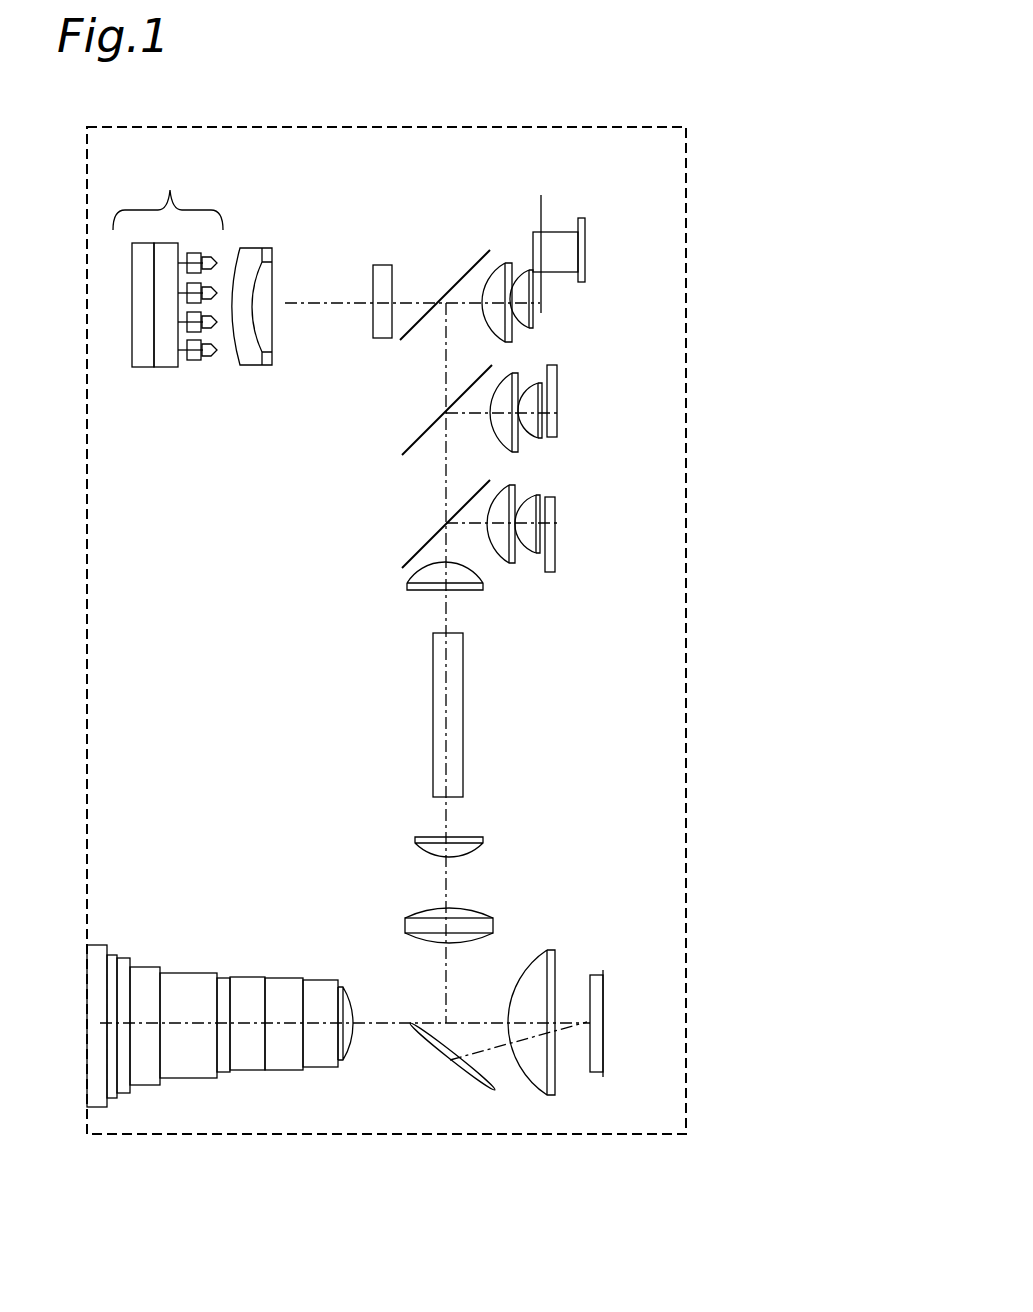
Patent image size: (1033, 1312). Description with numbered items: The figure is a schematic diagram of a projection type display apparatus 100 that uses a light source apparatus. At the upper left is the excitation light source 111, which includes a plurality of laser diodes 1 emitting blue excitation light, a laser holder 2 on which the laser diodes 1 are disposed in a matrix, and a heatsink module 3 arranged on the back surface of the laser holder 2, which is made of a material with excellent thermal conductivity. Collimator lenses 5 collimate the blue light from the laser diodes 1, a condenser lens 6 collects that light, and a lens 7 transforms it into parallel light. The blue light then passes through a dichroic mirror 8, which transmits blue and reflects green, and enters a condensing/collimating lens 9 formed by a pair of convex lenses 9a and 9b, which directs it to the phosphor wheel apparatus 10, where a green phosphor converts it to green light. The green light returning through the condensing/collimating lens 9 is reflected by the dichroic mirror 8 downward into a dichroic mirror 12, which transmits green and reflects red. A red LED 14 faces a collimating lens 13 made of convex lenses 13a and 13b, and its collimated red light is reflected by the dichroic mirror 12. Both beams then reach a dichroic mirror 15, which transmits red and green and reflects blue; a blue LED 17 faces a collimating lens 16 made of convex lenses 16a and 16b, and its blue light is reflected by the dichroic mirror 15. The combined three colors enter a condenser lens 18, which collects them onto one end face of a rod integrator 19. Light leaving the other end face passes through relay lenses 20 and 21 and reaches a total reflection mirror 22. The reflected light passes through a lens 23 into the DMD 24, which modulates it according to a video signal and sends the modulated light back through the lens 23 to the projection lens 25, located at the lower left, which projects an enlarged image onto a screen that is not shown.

The projection type display apparatus 100 is at (695, 377).
The excitation light source 111 is at (168, 192).
The laser diodes 1 is at (238, 325).
The laser holder 2 is at (167, 360).
The heatsink module 3 is at (142, 357).
The collimator lenses 5 is at (217, 260).
The condenser lens 6 is at (252, 359).
The lens 7 is at (382, 273).
The dichroic mirror 8 is at (452, 277).
The condensing/collimating lens 9 is at (555, 252).
The convex lens 9a is at (502, 262).
The convex lens 9b is at (533, 320).
The phosphor wheel apparatus 10 is at (550, 228).
The dichroic mirror 12 is at (413, 435).
The collimating lens 13 is at (570, 440).
The convex lens 13a is at (507, 438).
The convex lens 13b is at (547, 440).
The red LED 14 is at (560, 405).
The dichroic mirror 15 is at (400, 545).
The collimating lens 16 is at (561, 580).
The convex lens 16a is at (505, 558).
The convex lens 16b is at (530, 550).
The blue LED 17 is at (557, 550).
The condenser lens 18 is at (415, 587).
The rod integrator 19 is at (428, 698).
The relay lens 20 is at (490, 835).
The relay lens 21 is at (405, 918).
The total reflection mirror 22 is at (448, 1067).
The lens 23 is at (543, 950).
The DMD 24 is at (605, 1003).
The projection lens 25 is at (173, 987).